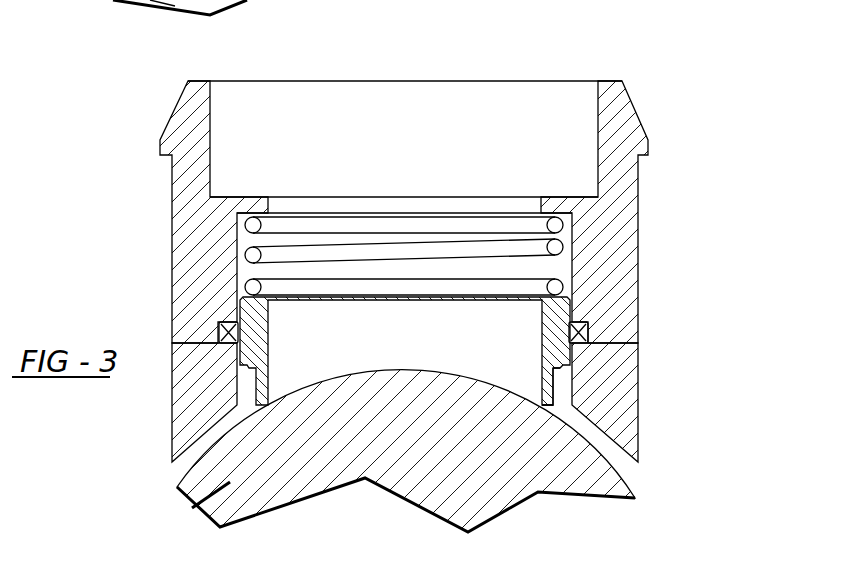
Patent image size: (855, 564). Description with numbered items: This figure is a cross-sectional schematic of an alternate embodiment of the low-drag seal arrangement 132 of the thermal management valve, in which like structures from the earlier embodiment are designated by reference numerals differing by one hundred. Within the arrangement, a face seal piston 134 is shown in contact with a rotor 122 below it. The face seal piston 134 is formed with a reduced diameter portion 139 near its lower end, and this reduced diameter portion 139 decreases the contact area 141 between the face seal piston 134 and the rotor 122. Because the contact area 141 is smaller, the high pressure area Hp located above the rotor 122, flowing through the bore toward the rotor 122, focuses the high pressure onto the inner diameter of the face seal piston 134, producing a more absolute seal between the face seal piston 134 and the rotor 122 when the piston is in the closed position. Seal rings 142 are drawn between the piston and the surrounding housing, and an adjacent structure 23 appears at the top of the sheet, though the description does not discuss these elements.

The adjacent structure 23 is at (165, 0).
The low-drag seal arrangement 132 is at (566, 52).
The face seal piston 134 is at (558, 312).
The reduced diameter portion 139 is at (557, 387).
The contact area 141 is at (547, 405).
The seal ring 142 is at (228, 320).
The rotor 122 is at (195, 503).